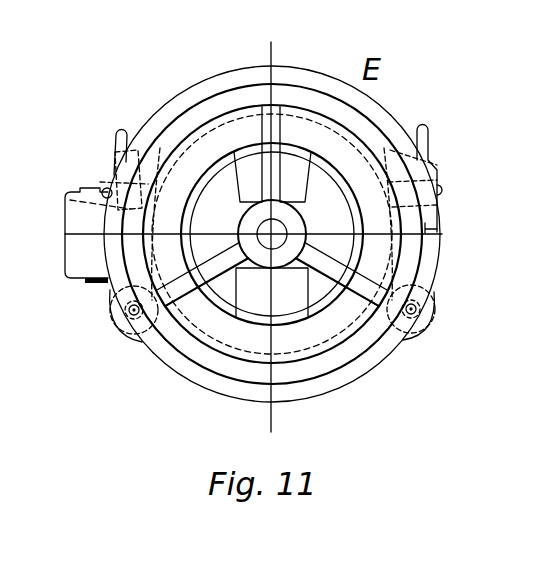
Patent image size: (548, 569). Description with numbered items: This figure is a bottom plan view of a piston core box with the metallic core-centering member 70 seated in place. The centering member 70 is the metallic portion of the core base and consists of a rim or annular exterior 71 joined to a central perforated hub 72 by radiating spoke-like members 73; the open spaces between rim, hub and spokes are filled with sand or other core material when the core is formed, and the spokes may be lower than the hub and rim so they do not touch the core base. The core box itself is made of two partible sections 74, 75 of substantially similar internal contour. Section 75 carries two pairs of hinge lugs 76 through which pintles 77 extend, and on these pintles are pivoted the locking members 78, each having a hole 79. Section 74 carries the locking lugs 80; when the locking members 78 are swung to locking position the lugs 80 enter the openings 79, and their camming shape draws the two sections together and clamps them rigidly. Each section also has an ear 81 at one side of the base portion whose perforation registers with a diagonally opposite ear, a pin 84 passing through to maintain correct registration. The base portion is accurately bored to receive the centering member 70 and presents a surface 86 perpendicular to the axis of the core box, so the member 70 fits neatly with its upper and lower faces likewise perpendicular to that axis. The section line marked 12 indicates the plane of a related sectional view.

The section line 12- 12 is at (263, 39).
The metallic centering member 70 is at (306, 97).
The rim 71 is at (190, 345).
The central perforated hub 72 is at (296, 218).
The spoke-like members 73 is at (316, 252).
The core box section 74 is at (187, 97).
The core box section 75 is at (377, 353).
The hinge lugs 76 is at (122, 326).
The pintles 77 is at (132, 300).
The locking members 78 is at (108, 164).
The hole 79 is at (67, 198).
The locking lugs 80 is at (106, 190).
The ear 81 is at (67, 255).
The pin 84 is at (82, 283).
The surface 86 is at (334, 333).